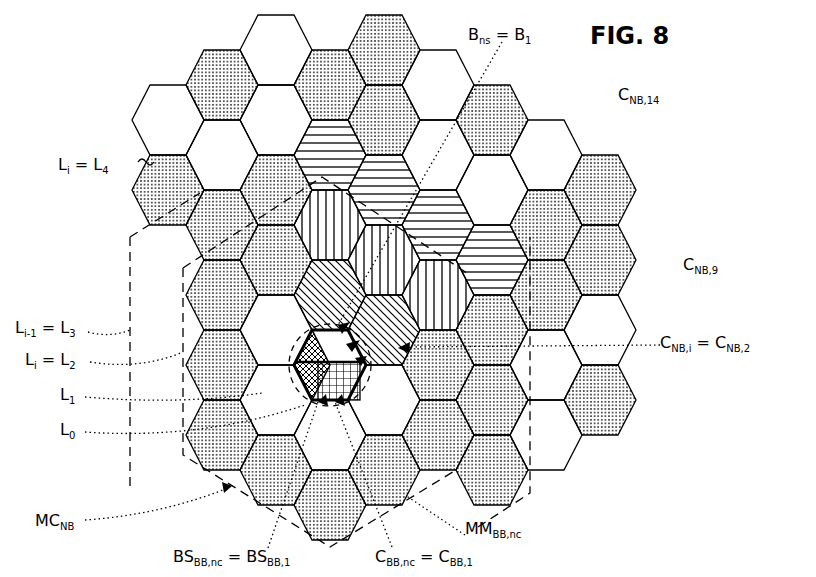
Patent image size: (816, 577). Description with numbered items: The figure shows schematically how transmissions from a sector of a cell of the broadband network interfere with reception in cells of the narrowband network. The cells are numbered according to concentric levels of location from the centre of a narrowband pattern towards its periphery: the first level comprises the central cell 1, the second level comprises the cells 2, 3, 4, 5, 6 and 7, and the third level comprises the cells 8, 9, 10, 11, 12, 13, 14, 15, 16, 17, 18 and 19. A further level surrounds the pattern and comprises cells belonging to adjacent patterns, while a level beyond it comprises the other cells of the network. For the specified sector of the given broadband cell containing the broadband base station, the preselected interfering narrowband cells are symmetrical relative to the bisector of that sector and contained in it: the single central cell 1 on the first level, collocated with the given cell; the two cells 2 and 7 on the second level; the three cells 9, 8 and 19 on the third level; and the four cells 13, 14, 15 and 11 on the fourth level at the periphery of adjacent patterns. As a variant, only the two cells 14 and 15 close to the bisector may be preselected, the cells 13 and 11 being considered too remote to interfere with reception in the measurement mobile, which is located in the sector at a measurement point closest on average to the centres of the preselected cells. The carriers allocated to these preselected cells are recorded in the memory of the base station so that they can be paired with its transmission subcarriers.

The central cell C_NB 1 is at (411, 242).
The cell C_NB 2 is at (330, 190).
The cell C_NB 3 is at (411, 260).
The cell C_NB 4 is at (357, 295).
The cell C_NB 5 is at (357, 277).
The cell C_NB 6 is at (411, 225).
The cell C_NB 7 is at (465, 312).
The cell C_NB 8 is at (384, 260).
The cell C_NB 9 is at (683, 268).
The cell C_NB 10 is at (384, 225).
The cell C_NB 11 is at (465, 295).
The cell C_NB 12 is at (411, 330).
The cell C_NB 13 is at (357, 365).
The cell C_NB 14 is at (615, 95).
The cell C_NB 15 is at (357, 330).
The cell C_NB 16 is at (357, 260).
The cell C_NB 17 is at (357, 190).
The cell C_NB 18 is at (411, 277).
The cell C_NB 19 is at (465, 242).